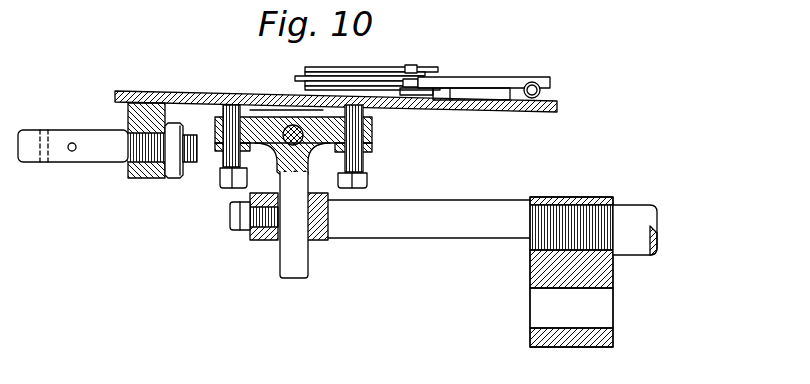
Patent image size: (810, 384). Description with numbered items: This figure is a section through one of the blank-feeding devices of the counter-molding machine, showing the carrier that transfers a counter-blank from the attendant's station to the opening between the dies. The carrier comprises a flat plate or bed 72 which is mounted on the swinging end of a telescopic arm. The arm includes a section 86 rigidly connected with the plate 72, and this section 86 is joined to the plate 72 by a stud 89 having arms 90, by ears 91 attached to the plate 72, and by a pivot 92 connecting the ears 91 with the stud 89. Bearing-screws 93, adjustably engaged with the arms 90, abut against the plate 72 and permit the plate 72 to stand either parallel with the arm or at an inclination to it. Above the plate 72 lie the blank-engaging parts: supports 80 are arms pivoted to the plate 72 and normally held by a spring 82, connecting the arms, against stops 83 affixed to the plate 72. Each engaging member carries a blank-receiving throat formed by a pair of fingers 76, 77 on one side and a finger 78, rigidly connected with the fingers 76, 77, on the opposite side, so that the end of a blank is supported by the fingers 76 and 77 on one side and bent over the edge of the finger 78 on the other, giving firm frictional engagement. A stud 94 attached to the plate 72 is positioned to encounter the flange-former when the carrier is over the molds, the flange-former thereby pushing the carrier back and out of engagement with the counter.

The plate 72 is at (185, 92).
The finger 76 is at (375, 73).
The finger 77 is at (387, 89).
The finger 78 is at (347, 78).
The support 80 is at (493, 80).
The spring 82 is at (547, 90).
The stop 83 is at (418, 67).
The arm section 86 is at (632, 213).
The stud 89 is at (302, 263).
The arm 90 is at (372, 130).
The ear 91 is at (265, 110).
The pivot 92 is at (297, 112).
The bearing-screw 93 is at (363, 168).
The stud 94 is at (100, 150).